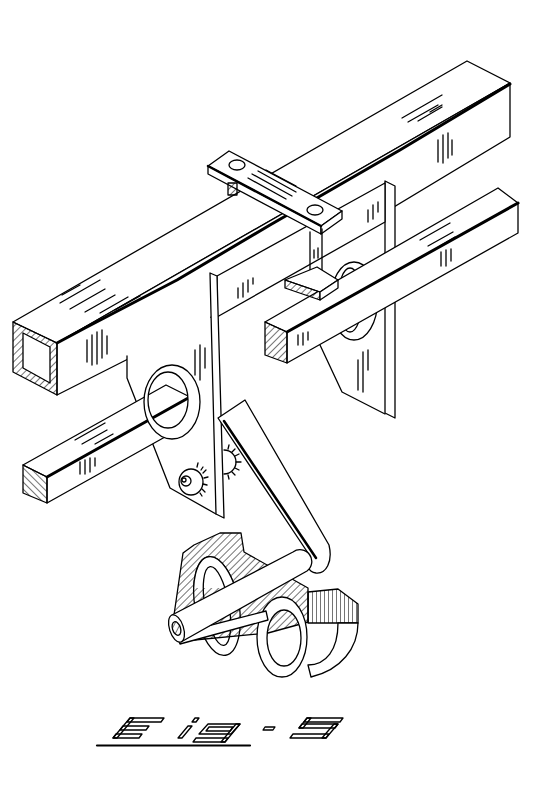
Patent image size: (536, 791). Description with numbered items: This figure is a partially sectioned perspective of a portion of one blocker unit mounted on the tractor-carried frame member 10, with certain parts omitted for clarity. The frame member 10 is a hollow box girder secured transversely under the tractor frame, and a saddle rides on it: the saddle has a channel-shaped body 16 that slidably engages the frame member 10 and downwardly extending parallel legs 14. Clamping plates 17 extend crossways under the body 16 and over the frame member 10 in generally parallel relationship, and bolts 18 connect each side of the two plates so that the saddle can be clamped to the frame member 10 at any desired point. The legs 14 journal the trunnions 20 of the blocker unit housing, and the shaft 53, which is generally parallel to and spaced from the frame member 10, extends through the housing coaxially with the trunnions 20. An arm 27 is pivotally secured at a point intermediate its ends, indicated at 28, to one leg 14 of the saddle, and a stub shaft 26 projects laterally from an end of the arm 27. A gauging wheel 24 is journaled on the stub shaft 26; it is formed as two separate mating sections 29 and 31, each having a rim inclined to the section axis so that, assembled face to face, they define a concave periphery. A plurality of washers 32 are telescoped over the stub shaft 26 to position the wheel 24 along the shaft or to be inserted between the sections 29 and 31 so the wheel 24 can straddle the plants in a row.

The frame member 10 is at (164, 233).
The legs 14 is at (396, 343).
The channel-shaped body 16 is at (393, 206).
The clamping plates 17 is at (307, 158).
The bolts 18 is at (246, 158).
The trunnions 20 is at (123, 398).
The gauging wheel 24 is at (332, 597).
The stub shaft 26 is at (166, 630).
The arm 27 is at (283, 497).
The pivot 28 is at (230, 470).
The wheel section 29 is at (363, 633).
The wheel section 31 is at (279, 616).
The washers 32 is at (182, 601).
The shaft 53 is at (73, 480).